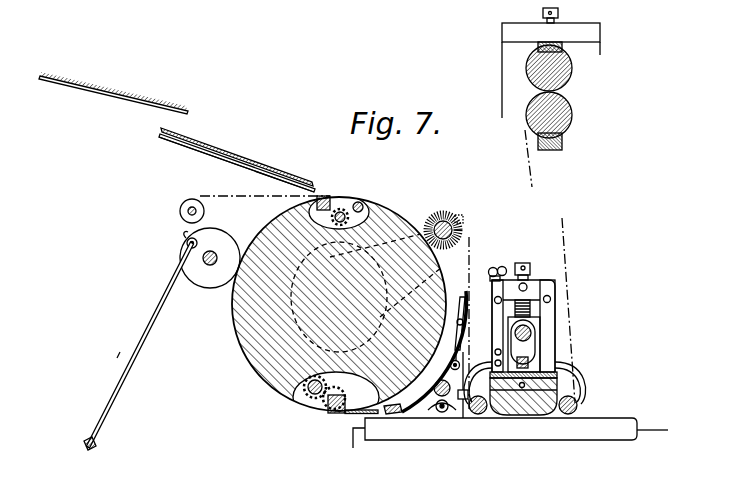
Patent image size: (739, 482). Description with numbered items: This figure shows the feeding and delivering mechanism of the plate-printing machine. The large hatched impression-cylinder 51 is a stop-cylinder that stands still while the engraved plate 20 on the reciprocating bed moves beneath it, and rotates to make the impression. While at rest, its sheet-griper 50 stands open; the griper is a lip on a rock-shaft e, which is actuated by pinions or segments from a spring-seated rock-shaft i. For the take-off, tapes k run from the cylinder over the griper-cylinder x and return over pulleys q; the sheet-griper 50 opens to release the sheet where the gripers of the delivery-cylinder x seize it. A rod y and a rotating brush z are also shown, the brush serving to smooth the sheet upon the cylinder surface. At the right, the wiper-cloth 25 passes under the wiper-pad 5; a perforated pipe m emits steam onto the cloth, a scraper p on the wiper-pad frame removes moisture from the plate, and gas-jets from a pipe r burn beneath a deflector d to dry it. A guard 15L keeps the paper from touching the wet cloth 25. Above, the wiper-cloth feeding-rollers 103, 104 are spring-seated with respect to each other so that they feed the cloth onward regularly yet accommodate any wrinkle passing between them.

The tapes k is at (265, 206).
The pulleys q is at (180, 210).
The griper-cylinder x is at (210, 258).
The rod y is at (142, 336).
The impression-cylinder 51 is at (340, 308).
The spring-seated rock-shaft i is at (322, 383).
The rock-shaft e is at (345, 399).
The sheet-griper 50 is at (355, 414).
The brush z is at (437, 219).
The wiper-cloth 25 is at (470, 255).
The guard 15L is at (463, 297).
The pipe m is at (461, 362).
The scraper p is at (466, 394).
The pipe r is at (446, 398).
The deflector d is at (436, 410).
The wiper-pad 5 is at (525, 339).
The engraved plate 20 is at (510, 433).
The wiper-cloth feeding roller 104 is at (573, 70).
The wiper-cloth feeding roller 103 is at (573, 117).